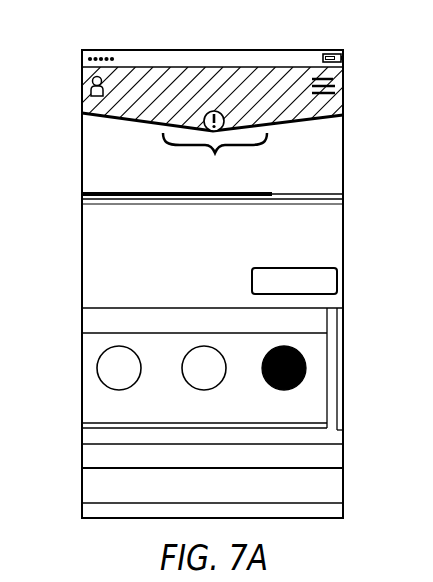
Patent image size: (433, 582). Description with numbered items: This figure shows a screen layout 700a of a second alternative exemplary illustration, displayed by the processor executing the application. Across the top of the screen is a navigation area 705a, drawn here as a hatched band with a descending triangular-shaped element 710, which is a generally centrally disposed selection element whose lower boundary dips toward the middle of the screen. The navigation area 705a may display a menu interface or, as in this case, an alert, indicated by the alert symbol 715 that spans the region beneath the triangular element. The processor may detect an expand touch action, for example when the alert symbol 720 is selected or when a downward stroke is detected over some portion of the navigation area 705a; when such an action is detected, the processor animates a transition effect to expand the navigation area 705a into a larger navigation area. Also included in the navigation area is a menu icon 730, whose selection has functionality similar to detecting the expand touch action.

The screen layout 700a is at (122, 42).
The navigation area 705a is at (73, 85).
The descending triangular-shaped element 710 is at (178, 117).
The alert symbol 715 is at (215, 158).
The alert symbol 720 is at (224, 120).
The menu icon 730 is at (335, 82).